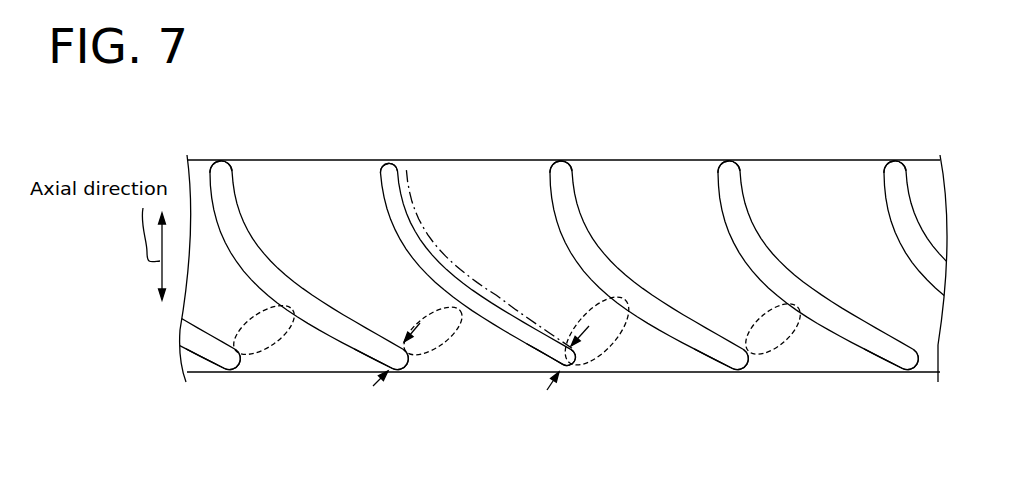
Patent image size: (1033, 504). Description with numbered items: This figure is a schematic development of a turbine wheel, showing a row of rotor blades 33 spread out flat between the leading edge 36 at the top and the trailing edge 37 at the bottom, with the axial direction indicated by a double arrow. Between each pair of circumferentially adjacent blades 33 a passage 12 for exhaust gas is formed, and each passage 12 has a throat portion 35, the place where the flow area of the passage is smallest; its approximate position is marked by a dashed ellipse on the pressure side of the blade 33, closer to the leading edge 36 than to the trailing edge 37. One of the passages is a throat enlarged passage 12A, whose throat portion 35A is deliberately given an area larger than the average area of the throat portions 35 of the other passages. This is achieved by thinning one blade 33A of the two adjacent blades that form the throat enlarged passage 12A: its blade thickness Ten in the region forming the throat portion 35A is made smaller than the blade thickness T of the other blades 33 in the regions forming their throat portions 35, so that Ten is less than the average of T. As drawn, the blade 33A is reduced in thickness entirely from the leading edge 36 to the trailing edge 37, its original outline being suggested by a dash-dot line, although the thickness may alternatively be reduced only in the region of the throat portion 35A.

The passage 12 is at (302, 266).
The throat enlarged passage 12A is at (535, 266).
The blade 33 is at (205, 348).
The blade 33A is at (525, 342).
The throat portion 35 is at (270, 330).
The throat portion 35A is at (603, 318).
The leading edge 36 is at (221, 163).
The trailing edge 37 is at (238, 362).
The blade thickness T is at (402, 350).
The blade thickness Ten is at (545, 362).